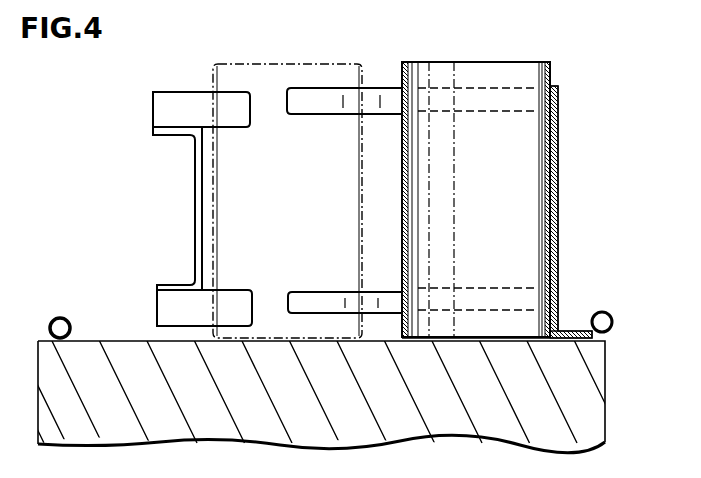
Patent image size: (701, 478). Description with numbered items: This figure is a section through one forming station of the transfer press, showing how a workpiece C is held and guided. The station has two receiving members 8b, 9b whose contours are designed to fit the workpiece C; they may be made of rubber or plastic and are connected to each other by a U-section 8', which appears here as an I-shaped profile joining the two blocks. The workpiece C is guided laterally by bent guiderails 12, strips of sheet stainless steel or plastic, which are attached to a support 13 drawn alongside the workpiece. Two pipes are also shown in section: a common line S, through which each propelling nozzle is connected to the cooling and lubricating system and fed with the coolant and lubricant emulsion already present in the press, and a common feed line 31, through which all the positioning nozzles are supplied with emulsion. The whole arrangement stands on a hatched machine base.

The receiving member 8b is at (165, 100).
The U-section 8' is at (177, 208).
The receiving member 9b is at (238, 300).
The guiderail 12 is at (383, 100).
The support 13 is at (561, 187).
The workpiece C is at (315, 74).
The common line S is at (68, 318).
The common feed line 31 is at (602, 310).